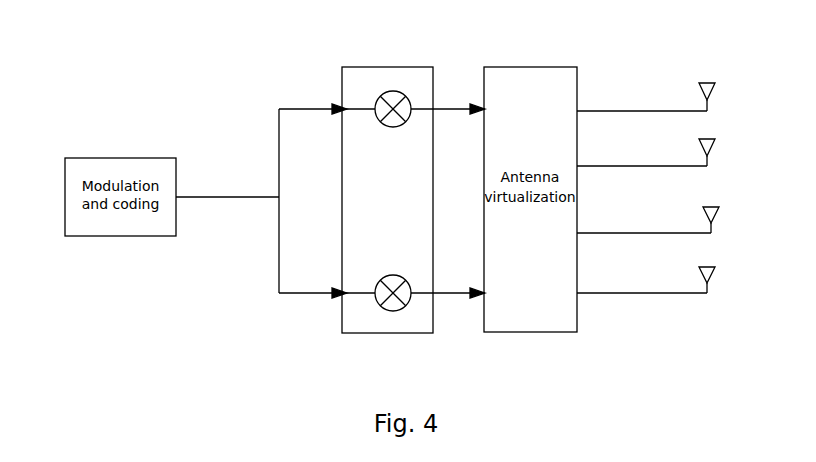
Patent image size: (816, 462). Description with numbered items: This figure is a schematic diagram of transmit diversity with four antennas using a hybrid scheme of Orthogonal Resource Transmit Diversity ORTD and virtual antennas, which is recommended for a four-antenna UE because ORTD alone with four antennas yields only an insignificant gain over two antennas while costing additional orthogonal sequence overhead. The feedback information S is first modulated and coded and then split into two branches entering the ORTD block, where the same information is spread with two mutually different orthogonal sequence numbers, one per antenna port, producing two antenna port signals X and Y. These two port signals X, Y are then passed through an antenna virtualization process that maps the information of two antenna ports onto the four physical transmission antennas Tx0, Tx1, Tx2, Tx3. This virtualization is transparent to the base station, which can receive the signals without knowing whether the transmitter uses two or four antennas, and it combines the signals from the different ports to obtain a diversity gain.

The feedback information S is at (275, 200).
The Orthogonal Resource Transmit Diversity ORTD is at (387, 184).
The antenna port signal X is at (448, 98).
The antenna port signal Y is at (448, 284).
The transmission antenna Tx0 is at (646, 97).
The transmission antenna Tx1 is at (646, 152).
The transmission antenna Tx2 is at (648, 220).
The transmission antenna Tx3 is at (646, 280).